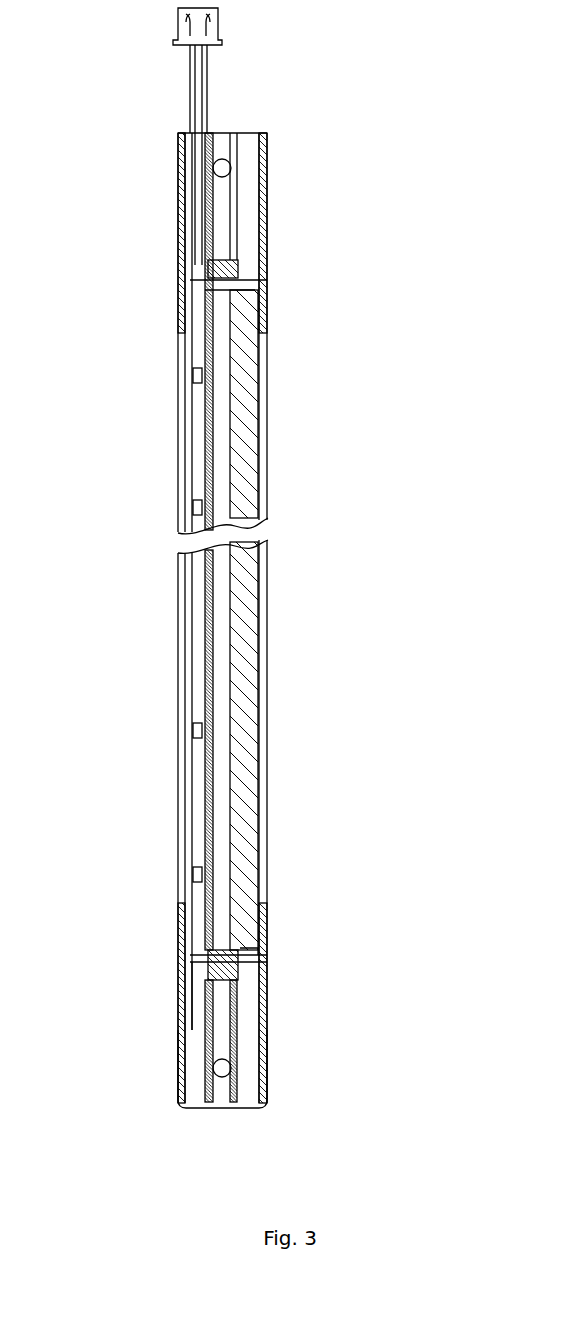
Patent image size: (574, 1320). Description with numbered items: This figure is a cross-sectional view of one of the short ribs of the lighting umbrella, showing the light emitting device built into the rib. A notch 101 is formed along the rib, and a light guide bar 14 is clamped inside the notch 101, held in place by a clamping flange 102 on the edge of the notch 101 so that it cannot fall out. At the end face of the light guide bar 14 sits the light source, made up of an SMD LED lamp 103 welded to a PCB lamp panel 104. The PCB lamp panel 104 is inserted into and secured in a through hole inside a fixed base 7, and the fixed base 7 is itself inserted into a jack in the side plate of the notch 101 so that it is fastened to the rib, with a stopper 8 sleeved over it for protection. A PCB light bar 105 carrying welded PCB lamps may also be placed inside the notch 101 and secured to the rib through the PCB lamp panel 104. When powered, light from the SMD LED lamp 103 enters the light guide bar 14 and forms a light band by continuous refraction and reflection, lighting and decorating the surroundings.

The fixed base 7 is at (218, 970).
The stopper 8 is at (264, 1106).
The light guide bar 14 is at (245, 845).
The notch 101 is at (248, 964).
The clamping flange 102 is at (190, 895).
The SMD LED lamp 103 is at (250, 950).
The PCB lamp panel 104 is at (238, 958).
The PCB light bar 105 is at (205, 637).